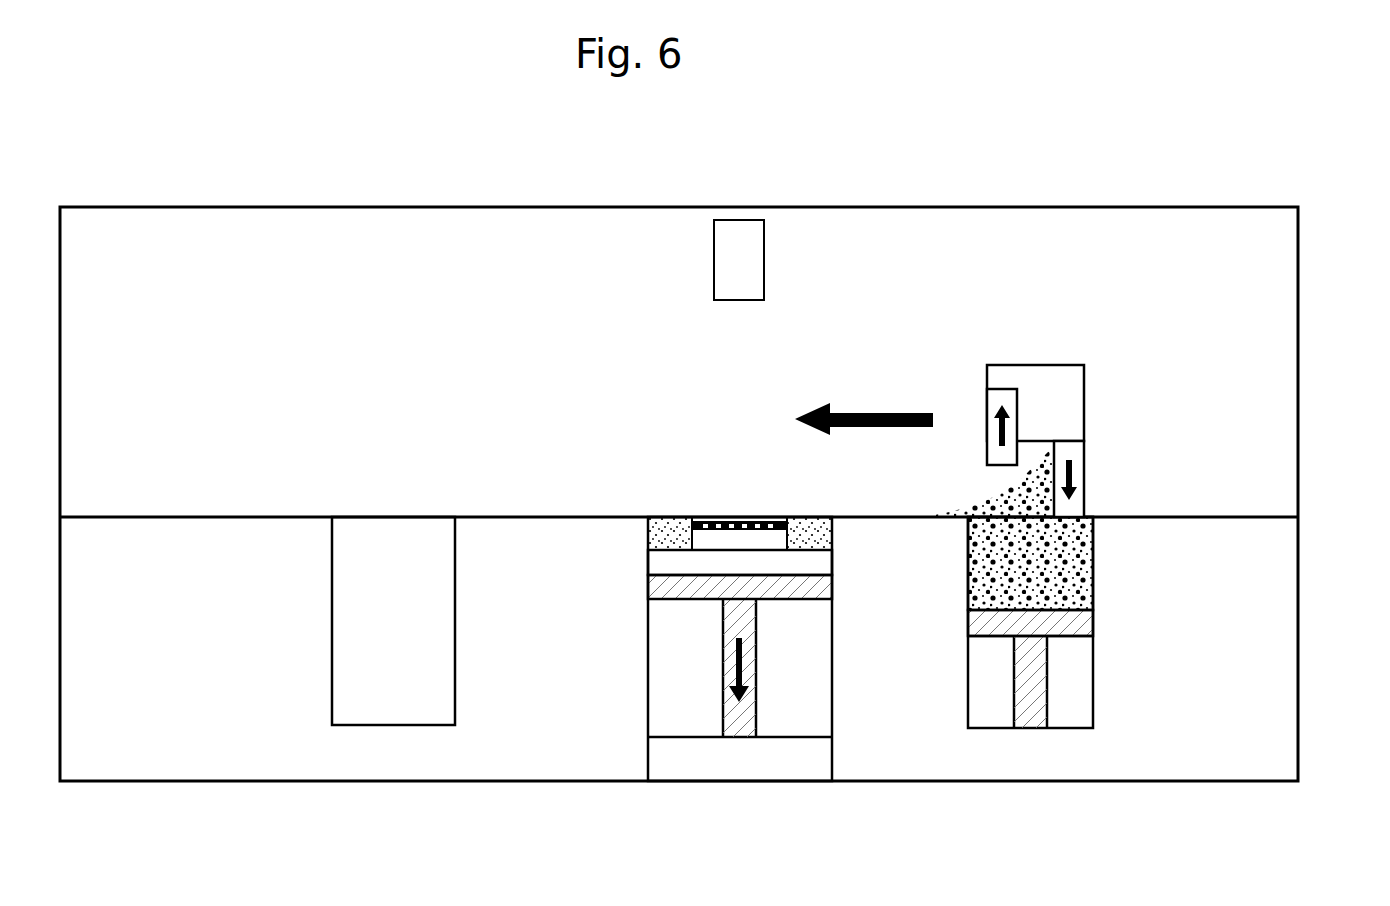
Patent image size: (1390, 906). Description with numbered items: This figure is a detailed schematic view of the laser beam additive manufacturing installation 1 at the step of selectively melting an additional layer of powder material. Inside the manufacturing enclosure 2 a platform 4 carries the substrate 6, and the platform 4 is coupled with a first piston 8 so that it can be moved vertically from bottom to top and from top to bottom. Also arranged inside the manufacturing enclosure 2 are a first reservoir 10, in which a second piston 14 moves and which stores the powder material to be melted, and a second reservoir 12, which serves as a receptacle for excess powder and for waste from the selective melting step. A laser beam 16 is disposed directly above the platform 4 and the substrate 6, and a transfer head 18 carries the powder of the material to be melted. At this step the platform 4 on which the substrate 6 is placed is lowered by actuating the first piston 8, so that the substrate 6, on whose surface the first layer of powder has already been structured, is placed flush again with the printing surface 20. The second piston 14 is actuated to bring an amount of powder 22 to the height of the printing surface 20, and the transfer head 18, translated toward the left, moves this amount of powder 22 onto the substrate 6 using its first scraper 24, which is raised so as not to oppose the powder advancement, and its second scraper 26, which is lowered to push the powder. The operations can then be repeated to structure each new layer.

The additive manufacturing installation 1 is at (1280, 143).
The manufacturing enclosure 2 is at (1300, 262).
The platform 4 is at (812, 570).
The substrate 6 is at (730, 525).
The first piston 8 is at (1043, 681).
The first reservoir 10 is at (1095, 555).
The second reservoir 12 is at (414, 641).
The second piston 14 is at (745, 706).
The laser beam 16 is at (752, 272).
The transfer head 18 is at (1106, 384).
The printing surface 20 is at (530, 517).
The amount of powder 22 is at (990, 497).
The first scraper 24 is at (990, 395).
The second scraper 26 is at (1075, 450).